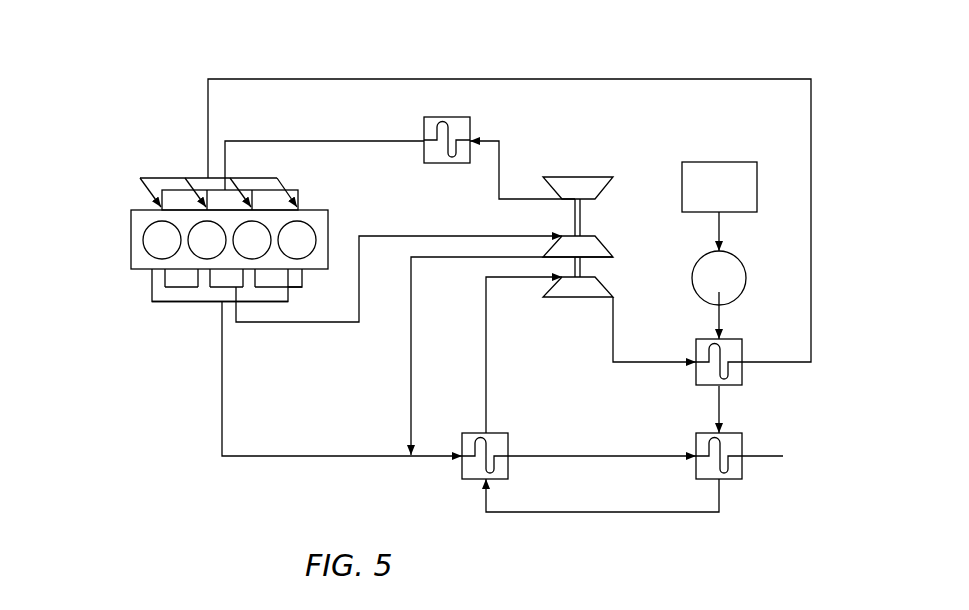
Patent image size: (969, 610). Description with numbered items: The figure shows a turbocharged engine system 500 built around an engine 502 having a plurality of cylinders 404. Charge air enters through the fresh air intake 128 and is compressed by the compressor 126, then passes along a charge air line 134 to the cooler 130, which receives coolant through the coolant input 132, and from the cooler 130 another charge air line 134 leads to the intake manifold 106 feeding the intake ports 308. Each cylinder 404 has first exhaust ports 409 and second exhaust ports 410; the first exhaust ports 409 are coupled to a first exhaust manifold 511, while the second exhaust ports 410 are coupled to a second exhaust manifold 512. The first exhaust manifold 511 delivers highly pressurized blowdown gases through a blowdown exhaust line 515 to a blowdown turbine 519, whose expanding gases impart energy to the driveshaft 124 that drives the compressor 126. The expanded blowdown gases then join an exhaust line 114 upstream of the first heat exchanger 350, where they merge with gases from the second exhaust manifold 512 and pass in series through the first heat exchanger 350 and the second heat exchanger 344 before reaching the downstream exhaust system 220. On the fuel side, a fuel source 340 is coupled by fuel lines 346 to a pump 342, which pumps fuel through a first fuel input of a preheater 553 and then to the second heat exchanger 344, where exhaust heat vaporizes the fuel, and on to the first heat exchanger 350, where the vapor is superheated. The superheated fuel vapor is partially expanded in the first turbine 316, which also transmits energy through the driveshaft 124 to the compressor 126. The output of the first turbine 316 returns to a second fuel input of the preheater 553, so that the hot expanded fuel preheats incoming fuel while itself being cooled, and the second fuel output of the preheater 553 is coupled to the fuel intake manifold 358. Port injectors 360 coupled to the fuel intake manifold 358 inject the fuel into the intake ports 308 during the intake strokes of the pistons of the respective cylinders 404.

The turbocharged engine system 500 is at (236, 42).
The engine 502 is at (80, 273).
The cylinders 404 is at (151, 240).
The intake ports 308 is at (166, 191).
The intake manifold 106 is at (287, 165).
The port injectors 360 is at (140, 178).
The fuel intake manifold 358 is at (155, 178).
The second exhaust ports 410 is at (153, 283).
The first exhaust ports 409 is at (303, 278).
The second exhaust manifold 512 is at (183, 302).
The first exhaust manifold 511 is at (270, 302).
The blowdown exhaust line 515 is at (338, 322).
The exhaust line 114 is at (222, 428).
The downstream exhaust system 220 is at (770, 456).
The cooler 130 is at (462, 117).
The coolant input 132 is at (447, 117).
The charge air line 134 is at (500, 155).
The compressor 126 is at (575, 182).
The fresh air intake 128 is at (615, 176).
The driveshaft 124 is at (573, 217).
The blowdown turbine 519 is at (597, 246).
The first turbine 316 is at (578, 292).
The fuel lines 346 is at (680, 79).
The fuel source 340 is at (720, 162).
The pump 342 is at (739, 278).
The preheater 553 is at (736, 370).
The first heat exchanger 350 is at (462, 469).
The second heat exchanger 344 is at (737, 470).